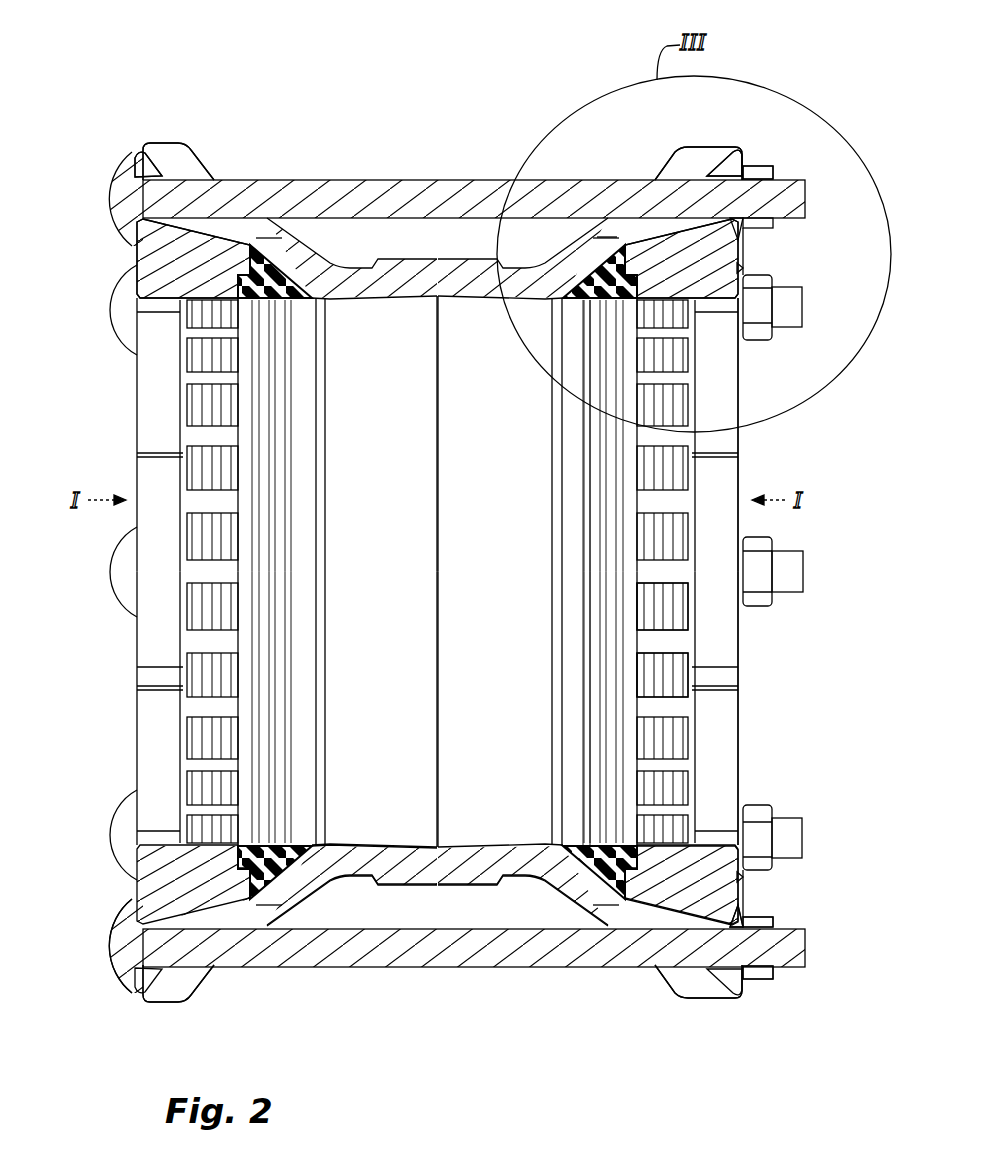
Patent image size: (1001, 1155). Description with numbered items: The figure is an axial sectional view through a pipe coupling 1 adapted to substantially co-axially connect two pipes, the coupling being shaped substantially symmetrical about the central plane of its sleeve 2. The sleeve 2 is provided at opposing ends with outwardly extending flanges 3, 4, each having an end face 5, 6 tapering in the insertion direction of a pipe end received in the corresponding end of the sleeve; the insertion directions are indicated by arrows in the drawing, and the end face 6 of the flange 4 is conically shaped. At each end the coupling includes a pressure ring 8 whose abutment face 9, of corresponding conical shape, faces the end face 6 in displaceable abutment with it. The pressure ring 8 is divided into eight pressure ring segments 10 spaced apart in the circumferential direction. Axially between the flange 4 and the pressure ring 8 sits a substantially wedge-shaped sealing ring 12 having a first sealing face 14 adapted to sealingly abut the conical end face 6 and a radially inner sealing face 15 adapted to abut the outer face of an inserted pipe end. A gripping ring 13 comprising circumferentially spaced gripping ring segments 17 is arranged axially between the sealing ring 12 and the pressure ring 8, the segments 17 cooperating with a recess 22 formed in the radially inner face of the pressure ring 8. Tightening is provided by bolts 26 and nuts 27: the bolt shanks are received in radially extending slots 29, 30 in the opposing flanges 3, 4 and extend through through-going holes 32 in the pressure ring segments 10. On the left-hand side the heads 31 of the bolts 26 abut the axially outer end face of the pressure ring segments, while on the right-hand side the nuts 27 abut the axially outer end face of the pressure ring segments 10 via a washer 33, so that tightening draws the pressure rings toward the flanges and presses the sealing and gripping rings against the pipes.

The pipe coupling 1 is at (332, 137).
The sleeve 2 is at (367, 887).
The flange 3 is at (198, 146).
The flange 4 is at (658, 168).
The end face 5 is at (224, 173).
The end face 6 is at (715, 145).
The pressure ring 8 is at (738, 250).
The abutment face 9 is at (708, 168).
The pressure ring segment 10 is at (727, 895).
The sealing ring 12 is at (603, 235).
The gripping ring 13 is at (686, 602).
The first sealing face 14 is at (617, 246).
The radially inner sealing face 15 is at (585, 828).
The gripping ring segment 17 is at (680, 663).
The recess 22 is at (655, 310).
The bolt 26 is at (415, 978).
The nut 27 is at (753, 972).
The slot 29 is at (177, 993).
The slot 30 is at (692, 985).
The bolt head 31 is at (116, 977).
The through-going hole 32 is at (668, 918).
The washer 33 is at (733, 977).